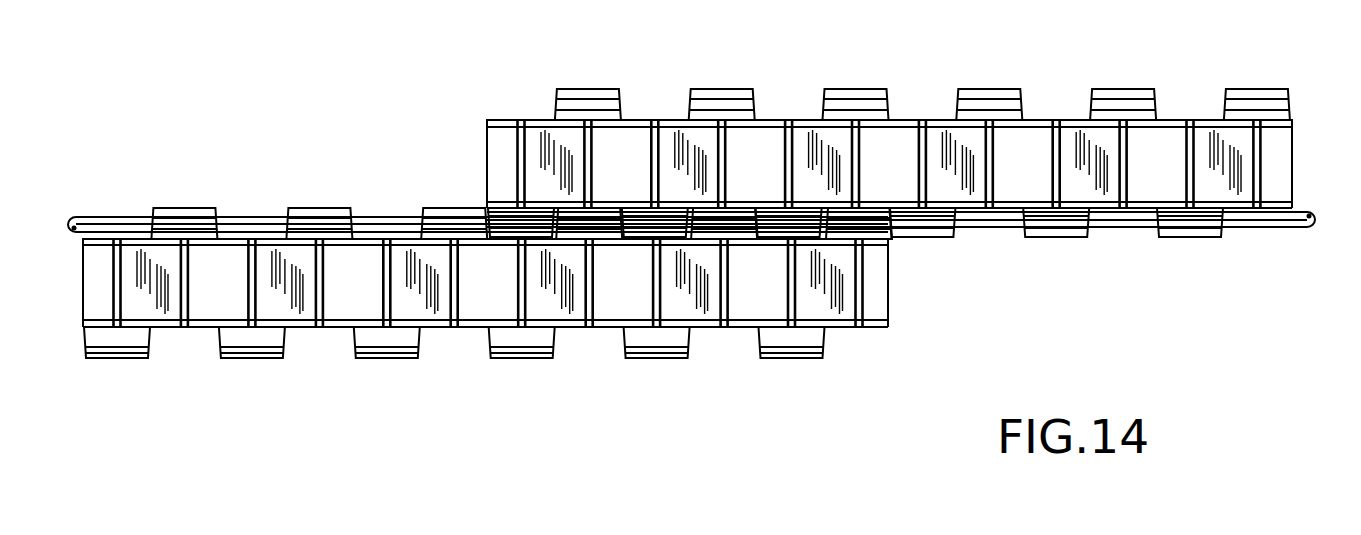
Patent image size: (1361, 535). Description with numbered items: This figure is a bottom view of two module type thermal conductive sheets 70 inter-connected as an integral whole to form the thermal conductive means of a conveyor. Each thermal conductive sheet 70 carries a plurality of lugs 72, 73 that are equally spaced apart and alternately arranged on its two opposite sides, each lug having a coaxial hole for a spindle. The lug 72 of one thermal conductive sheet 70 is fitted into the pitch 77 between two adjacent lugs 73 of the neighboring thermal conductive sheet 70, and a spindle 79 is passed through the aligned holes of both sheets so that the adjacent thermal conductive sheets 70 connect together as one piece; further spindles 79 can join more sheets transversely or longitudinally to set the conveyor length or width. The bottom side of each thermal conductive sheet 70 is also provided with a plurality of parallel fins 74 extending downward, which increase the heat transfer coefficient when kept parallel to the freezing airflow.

The thermal conductive sheet 70 is at (853, 82).
The lug 72 is at (181, 209).
The lug 73 is at (128, 360).
The parallel fin 74 is at (1263, 161).
The pitch 77 is at (181, 350).
The spindle 79 is at (108, 222).